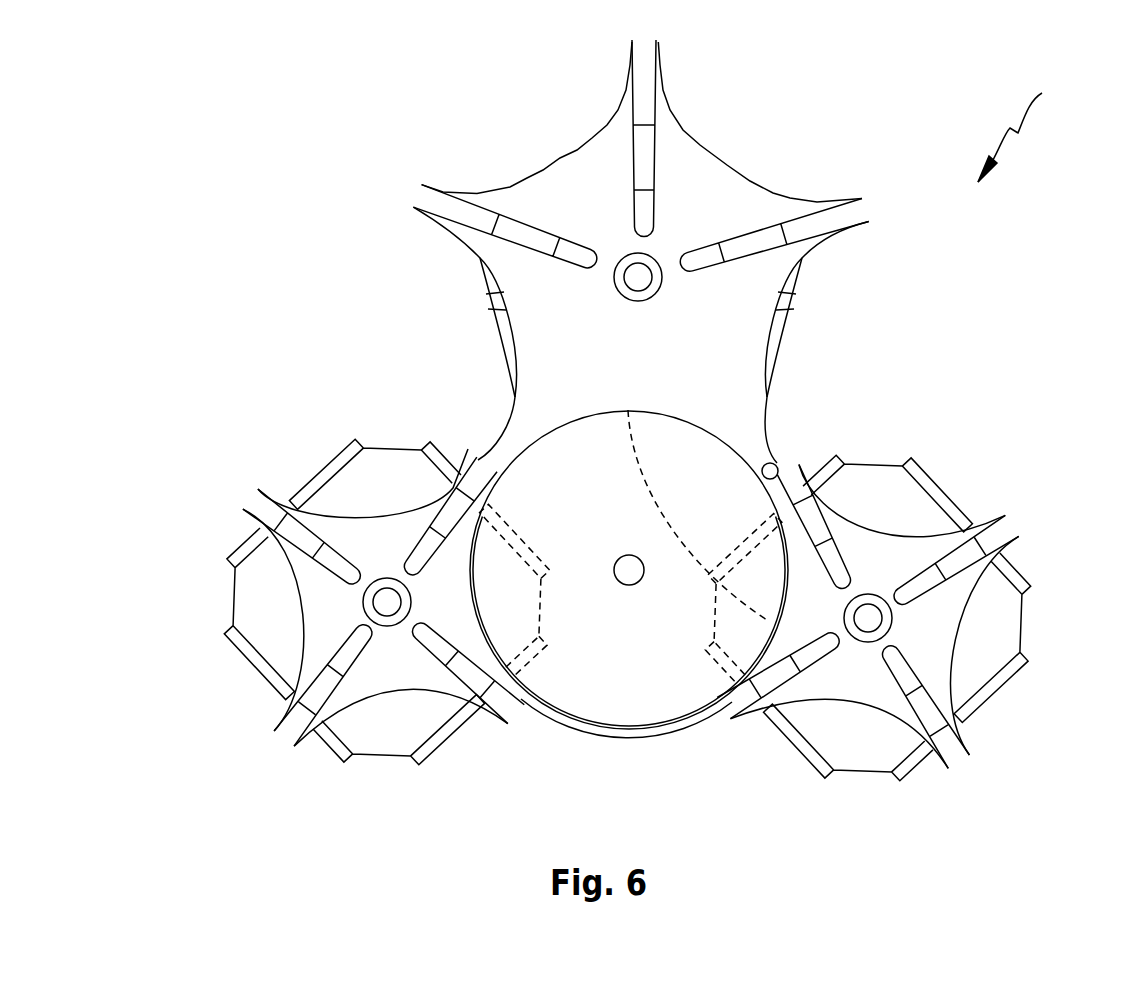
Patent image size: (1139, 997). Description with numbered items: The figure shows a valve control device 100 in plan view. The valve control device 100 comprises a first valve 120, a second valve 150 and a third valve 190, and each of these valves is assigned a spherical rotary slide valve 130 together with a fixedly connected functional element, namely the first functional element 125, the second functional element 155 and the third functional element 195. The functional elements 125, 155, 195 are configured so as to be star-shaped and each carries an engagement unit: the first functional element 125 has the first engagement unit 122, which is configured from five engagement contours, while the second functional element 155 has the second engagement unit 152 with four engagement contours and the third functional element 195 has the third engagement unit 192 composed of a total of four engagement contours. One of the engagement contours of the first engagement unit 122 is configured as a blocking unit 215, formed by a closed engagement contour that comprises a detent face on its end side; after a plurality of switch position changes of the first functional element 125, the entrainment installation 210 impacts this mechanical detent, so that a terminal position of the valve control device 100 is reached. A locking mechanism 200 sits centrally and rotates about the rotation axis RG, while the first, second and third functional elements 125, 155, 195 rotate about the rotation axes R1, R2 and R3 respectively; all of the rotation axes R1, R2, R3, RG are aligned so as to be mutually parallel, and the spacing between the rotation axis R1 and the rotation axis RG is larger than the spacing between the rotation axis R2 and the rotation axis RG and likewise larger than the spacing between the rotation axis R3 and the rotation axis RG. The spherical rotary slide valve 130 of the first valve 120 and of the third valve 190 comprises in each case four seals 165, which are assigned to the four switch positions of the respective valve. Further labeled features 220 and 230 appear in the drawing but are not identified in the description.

The valve control device 100 is at (1035, 133).
The first valve 120 is at (560, 157).
The first engagement unit 122 is at (418, 190).
The first functional element 125 is at (697, 200).
The spherical rotary slide valve 130 is at (580, 412).
The second valve 150 is at (870, 497).
The second engagement unit 152 is at (993, 538).
The second functional element 155 is at (890, 557).
The seals 165 is at (317, 480).
The third valve 190 is at (255, 605).
The third engagement unit 192 is at (313, 695).
The third functional element 195 is at (330, 607).
The locking mechanism 200 is at (608, 503).
The entrainment installation 210 is at (776, 465).
The blocking unit 215 is at (473, 460).
The housing wall 220 is at (597, 732).
The housing casing wall 230 is at (490, 300).
The rotation axis of the first functional element R1 is at (638, 277).
The rotation axis of the second functional element R2 is at (868, 618).
The rotation axis of the third functional element R3 is at (387, 602).
The rotation axis of the locking mechanism RG is at (631, 568).